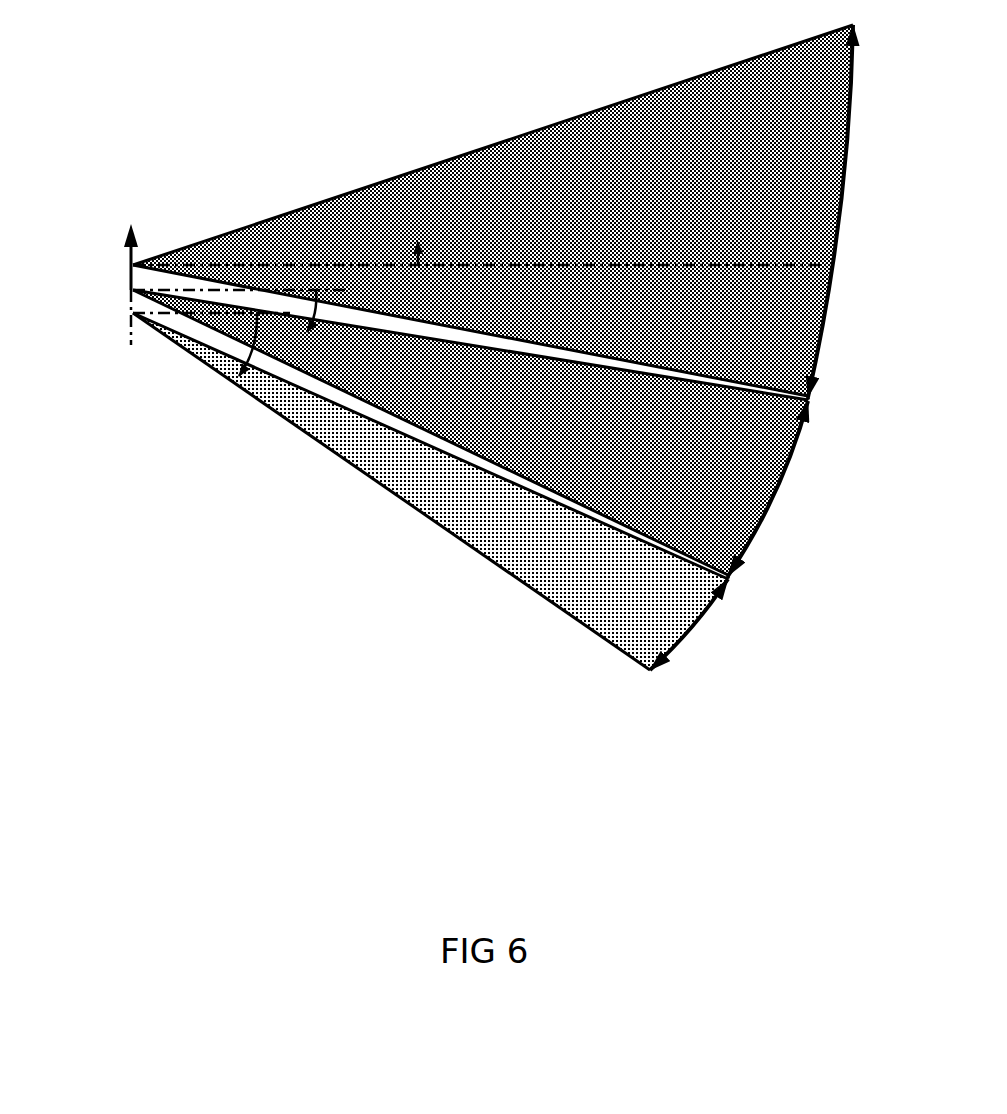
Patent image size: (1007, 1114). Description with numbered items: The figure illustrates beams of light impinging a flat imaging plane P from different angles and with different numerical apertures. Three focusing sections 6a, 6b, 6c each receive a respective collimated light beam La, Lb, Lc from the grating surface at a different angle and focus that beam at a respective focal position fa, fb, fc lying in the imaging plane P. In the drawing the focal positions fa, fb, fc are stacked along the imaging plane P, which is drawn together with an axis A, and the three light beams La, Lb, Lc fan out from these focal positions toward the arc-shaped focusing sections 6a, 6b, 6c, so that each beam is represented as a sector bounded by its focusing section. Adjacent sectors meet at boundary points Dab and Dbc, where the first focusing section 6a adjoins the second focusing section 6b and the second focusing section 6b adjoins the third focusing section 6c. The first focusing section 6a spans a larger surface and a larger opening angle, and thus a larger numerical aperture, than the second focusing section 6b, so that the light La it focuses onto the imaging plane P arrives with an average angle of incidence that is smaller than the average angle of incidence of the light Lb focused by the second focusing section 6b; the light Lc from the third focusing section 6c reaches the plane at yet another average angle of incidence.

The collimated light beam La is at (801, 238).
The collimated light beam Lb is at (735, 478).
The collimated light beam Lc is at (663, 602).
The first focusing section 6a is at (852, 222).
The second focusing section 6b is at (767, 517).
The third focusing section 6c is at (692, 633).
The optical axis A is at (130, 250).
The imaging plane P is at (128, 205).
The focal position fa is at (125, 265).
The focal position fb is at (125, 290).
The focal position fc is at (125, 314).
The boundary point between sectors a and b Dab is at (808, 398).
The boundary point between sectors b and c Dbc is at (728, 577).